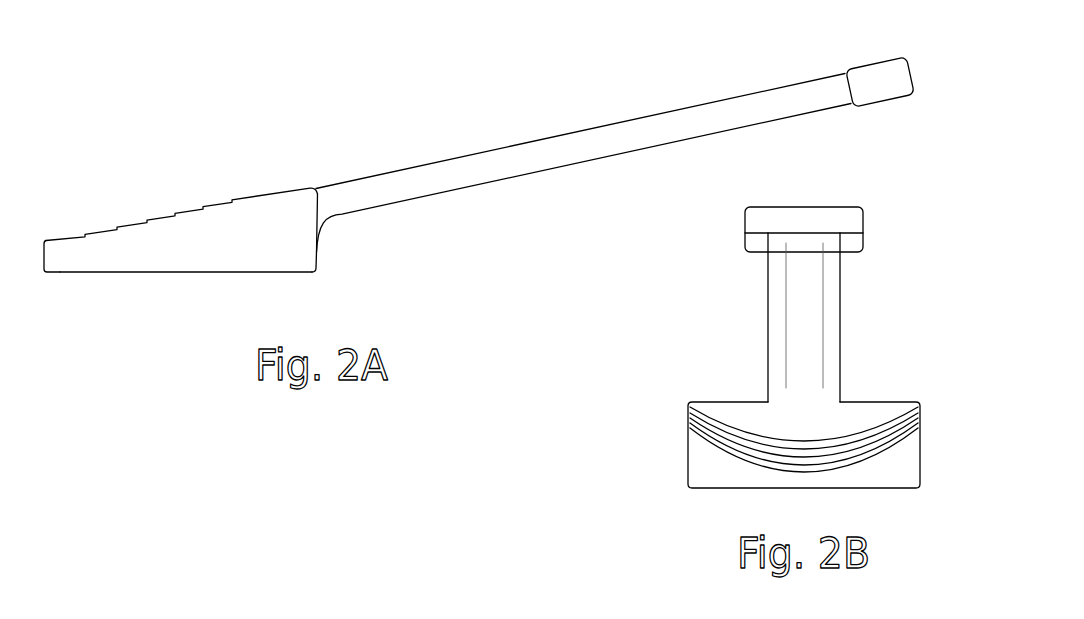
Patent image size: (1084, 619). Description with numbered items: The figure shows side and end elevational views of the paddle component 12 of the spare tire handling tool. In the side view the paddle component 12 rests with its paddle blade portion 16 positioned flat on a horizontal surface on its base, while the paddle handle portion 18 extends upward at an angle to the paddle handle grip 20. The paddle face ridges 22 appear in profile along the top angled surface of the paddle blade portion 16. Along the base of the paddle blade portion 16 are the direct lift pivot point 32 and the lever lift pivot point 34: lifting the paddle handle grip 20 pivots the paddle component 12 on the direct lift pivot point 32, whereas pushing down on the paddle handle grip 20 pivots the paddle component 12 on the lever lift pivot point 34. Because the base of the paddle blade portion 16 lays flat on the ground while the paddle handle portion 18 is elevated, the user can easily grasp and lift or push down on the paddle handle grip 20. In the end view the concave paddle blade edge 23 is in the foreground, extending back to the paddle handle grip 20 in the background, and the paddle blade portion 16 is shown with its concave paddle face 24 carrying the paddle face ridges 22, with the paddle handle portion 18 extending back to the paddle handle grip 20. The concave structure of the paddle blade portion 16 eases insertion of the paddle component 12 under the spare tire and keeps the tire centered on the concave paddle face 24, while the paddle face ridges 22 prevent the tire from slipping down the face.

In FIG. 2A, the paddle component 12 is at (479, 185).
In FIG. 2B, the paddle component 12 is at (794, 335).
In FIG. 2A, the paddle blade portion 16 is at (233, 220).
In FIG. 2B, the paddle blade portion 16 is at (791, 415).
In FIG. 2A, the paddle handle portion 18 is at (595, 125).
In FIG. 2B, the paddle handle portion 18 is at (768, 305).
In FIG. 2A, the paddle handle grip 20 is at (855, 70).
In FIG. 2B, the paddle handle grip 20 is at (804, 207).
In FIG. 2A, the paddle face ridges 22 is at (288, 188).
In FIG. 2B, the paddle face ridges 22 is at (774, 415).
In FIG. 2B, the concave paddle blade edge 23 is at (793, 487).
In FIG. 2B, the concave paddle face 24 is at (802, 410).
In FIG. 2A, the direct lift pivot point 32 is at (52, 287).
In FIG. 2A, the lever lift pivot point 34 is at (320, 279).